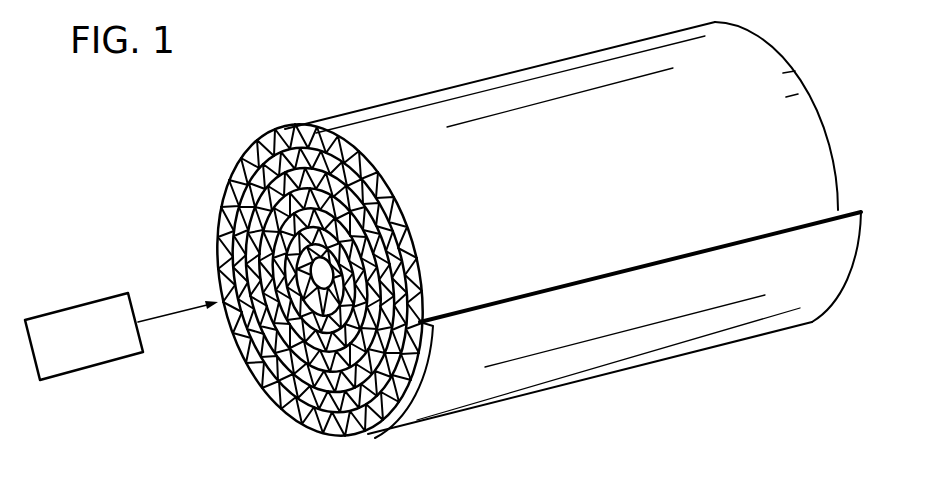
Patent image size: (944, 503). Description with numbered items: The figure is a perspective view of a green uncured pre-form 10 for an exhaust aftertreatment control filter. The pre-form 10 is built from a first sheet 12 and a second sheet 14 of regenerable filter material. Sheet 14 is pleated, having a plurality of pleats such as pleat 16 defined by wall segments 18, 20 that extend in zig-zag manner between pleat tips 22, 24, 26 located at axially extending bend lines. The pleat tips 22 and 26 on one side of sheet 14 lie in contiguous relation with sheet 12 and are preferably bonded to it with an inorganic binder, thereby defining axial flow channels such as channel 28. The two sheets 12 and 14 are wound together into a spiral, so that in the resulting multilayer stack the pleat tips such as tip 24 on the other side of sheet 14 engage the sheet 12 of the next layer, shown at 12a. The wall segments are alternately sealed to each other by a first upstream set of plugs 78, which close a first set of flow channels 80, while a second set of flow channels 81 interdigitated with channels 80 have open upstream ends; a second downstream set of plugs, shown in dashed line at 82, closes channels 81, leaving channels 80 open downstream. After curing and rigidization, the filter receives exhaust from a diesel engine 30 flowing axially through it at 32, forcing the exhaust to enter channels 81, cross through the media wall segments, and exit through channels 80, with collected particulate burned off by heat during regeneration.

The pre-form 10 is at (488, 70).
The second downstream set of plugs 82 is at (795, 72).
The second sheet 14 is at (420, 320).
The first sheet 12 is at (432, 332).
The sheet of next layer 12a is at (417, 290).
The wall segment 20 is at (282, 130).
The pleat tip 22 is at (353, 437).
The pleat tip 24 is at (338, 437).
The wall segment 18 is at (250, 146).
The pleat 16 is at (237, 222).
The first upstream set of plugs 78 is at (360, 173).
The first set of flow channels 80 is at (375, 203).
The second set of flow channels 81 is at (390, 228).
The axial flow channel 28 is at (278, 385).
The pleat tip 26 is at (325, 433).
The diesel engine 30 is at (93, 368).
The exhaust flow 32 is at (173, 315).